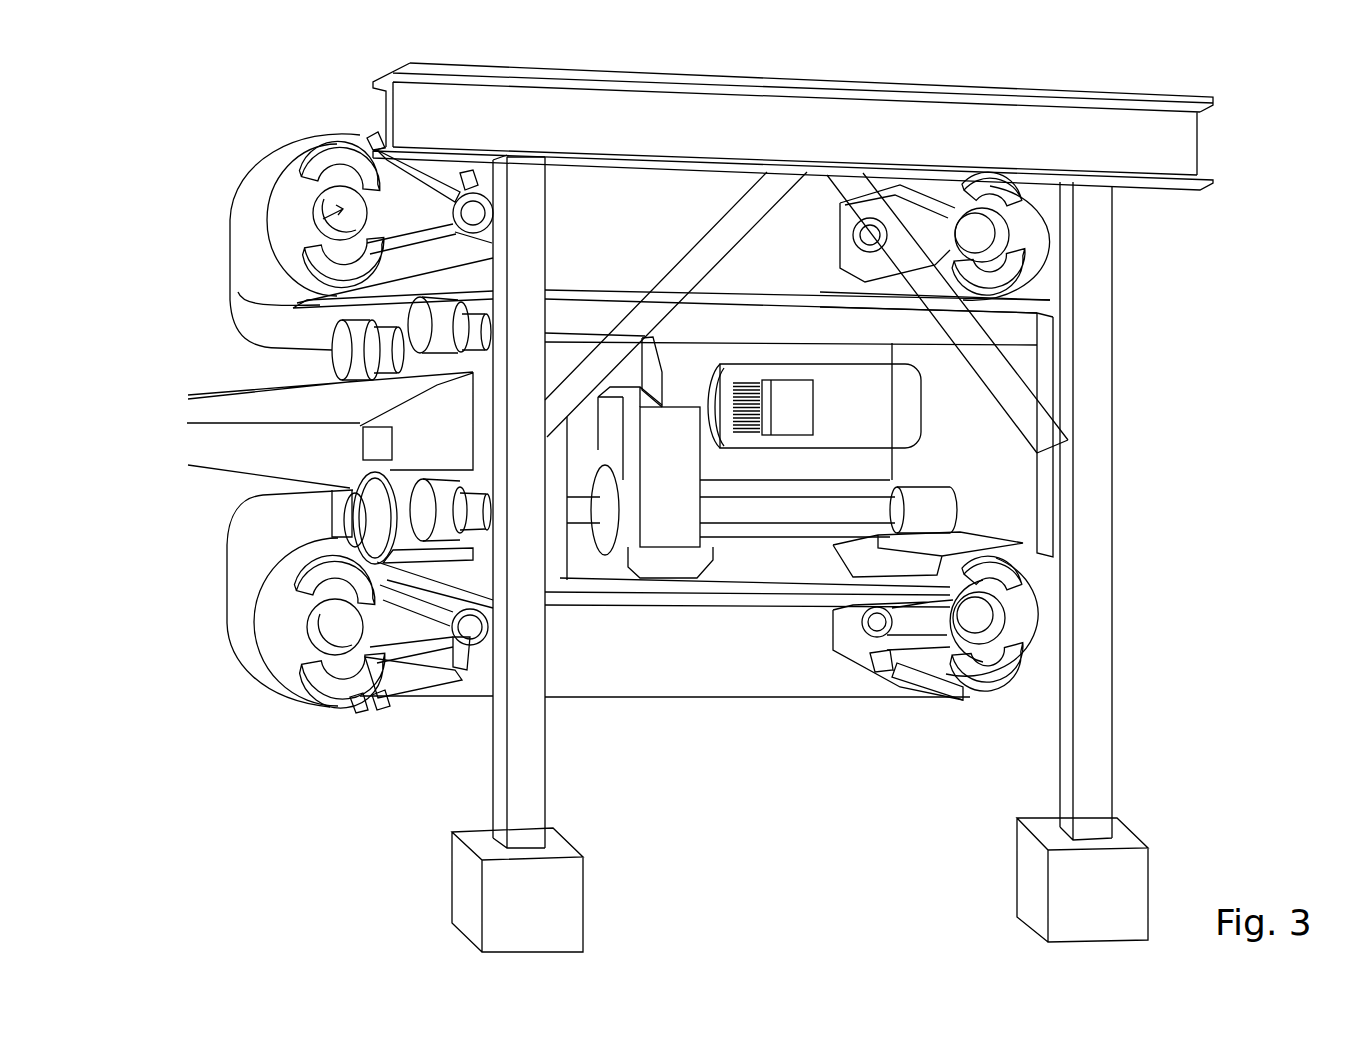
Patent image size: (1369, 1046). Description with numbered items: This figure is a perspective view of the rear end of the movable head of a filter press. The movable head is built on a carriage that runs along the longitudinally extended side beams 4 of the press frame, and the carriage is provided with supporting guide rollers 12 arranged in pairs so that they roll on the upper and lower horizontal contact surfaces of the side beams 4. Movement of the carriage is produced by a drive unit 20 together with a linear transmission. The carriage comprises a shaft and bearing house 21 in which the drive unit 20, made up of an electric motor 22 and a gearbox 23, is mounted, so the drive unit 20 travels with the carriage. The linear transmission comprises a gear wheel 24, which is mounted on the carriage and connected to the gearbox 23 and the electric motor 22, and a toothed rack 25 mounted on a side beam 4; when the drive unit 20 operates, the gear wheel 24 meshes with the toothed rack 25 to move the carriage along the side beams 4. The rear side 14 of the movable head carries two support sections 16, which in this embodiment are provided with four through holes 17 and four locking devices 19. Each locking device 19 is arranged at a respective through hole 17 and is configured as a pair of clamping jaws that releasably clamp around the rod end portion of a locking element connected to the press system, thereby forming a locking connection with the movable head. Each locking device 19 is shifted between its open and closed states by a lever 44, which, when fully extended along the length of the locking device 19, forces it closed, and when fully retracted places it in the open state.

The side beam 4 is at (460, 447).
The supporting guide roller 12 is at (337, 352).
The rear side 14 is at (1242, 666).
The support section 16 is at (632, 242).
The through hole 17 is at (322, 200).
The locking device 19 is at (323, 163).
The drive unit 20 is at (1001, 469).
The shaft and bearing house 21 is at (731, 712).
The electric motor 22 is at (872, 422).
The gearbox 23 is at (690, 491).
The gear wheel 24 is at (228, 548).
The toothed rack 25 is at (365, 443).
The lever 44 is at (922, 675).